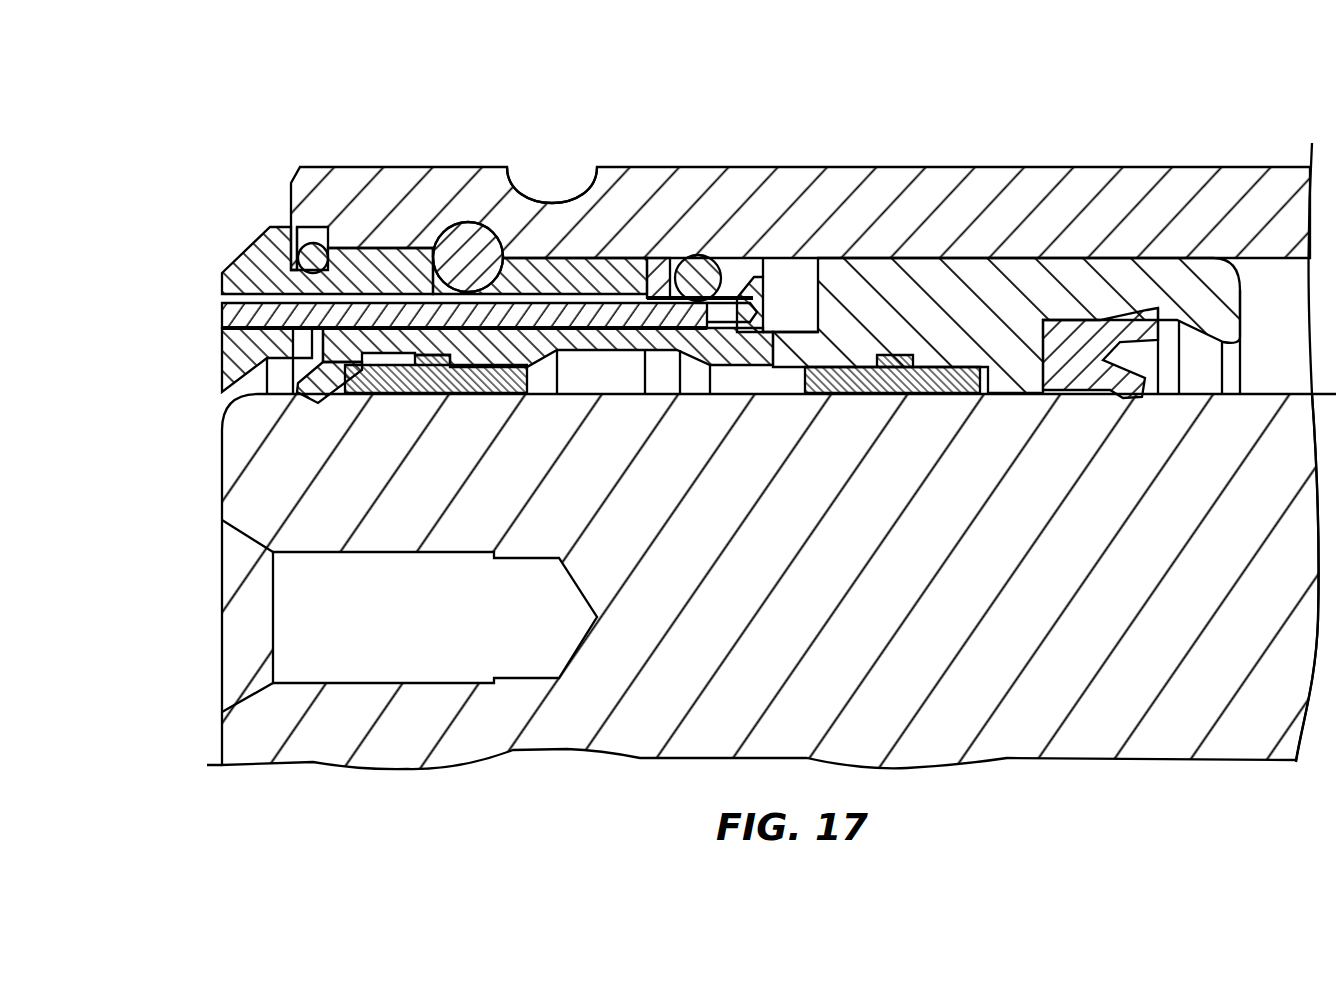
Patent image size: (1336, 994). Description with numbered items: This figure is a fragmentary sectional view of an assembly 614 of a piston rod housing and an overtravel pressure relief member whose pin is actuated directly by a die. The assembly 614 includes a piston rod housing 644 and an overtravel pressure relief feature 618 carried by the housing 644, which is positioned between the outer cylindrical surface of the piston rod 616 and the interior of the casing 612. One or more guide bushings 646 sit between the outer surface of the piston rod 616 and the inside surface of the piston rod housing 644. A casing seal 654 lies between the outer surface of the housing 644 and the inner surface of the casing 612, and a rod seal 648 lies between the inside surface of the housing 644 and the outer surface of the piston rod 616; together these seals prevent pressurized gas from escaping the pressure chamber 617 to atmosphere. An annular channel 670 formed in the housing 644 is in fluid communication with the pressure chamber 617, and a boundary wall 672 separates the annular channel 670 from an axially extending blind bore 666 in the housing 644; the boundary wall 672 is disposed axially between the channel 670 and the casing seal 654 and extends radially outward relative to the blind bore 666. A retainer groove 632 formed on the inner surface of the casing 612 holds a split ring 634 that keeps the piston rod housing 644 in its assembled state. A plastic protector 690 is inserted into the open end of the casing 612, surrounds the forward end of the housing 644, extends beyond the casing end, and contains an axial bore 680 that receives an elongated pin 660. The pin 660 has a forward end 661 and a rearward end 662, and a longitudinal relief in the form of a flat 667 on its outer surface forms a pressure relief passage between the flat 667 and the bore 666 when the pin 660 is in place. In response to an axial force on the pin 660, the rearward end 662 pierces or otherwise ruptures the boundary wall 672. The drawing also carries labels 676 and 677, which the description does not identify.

The casing 612 is at (1160, 194).
The assembly 614 is at (803, 65).
The piston rod 616 is at (1040, 732).
The pressure chamber 617 is at (1231, 342).
The overtravel pressure relief feature 618 is at (618, 140).
The retainer groove 632 is at (466, 222).
The split ring 634 is at (452, 247).
The piston rod housing 644 is at (913, 310).
The guide bushings 646 is at (440, 380).
The rod seal 648 is at (1100, 398).
The casing seal 654 is at (693, 302).
The elongated pin 660 is at (385, 383).
The forward end 661 is at (230, 309).
The rearward end 662 is at (773, 396).
The axially extending blind bore 666 is at (632, 315).
The flat 667 is at (570, 290).
The annular channel 670 is at (801, 268).
The boundary wall 672 is at (767, 285).
The lip 676 is at (317, 256).
The seal 677 is at (300, 262).
The axial bore 680 is at (270, 337).
The plastic protector 690 is at (232, 248).